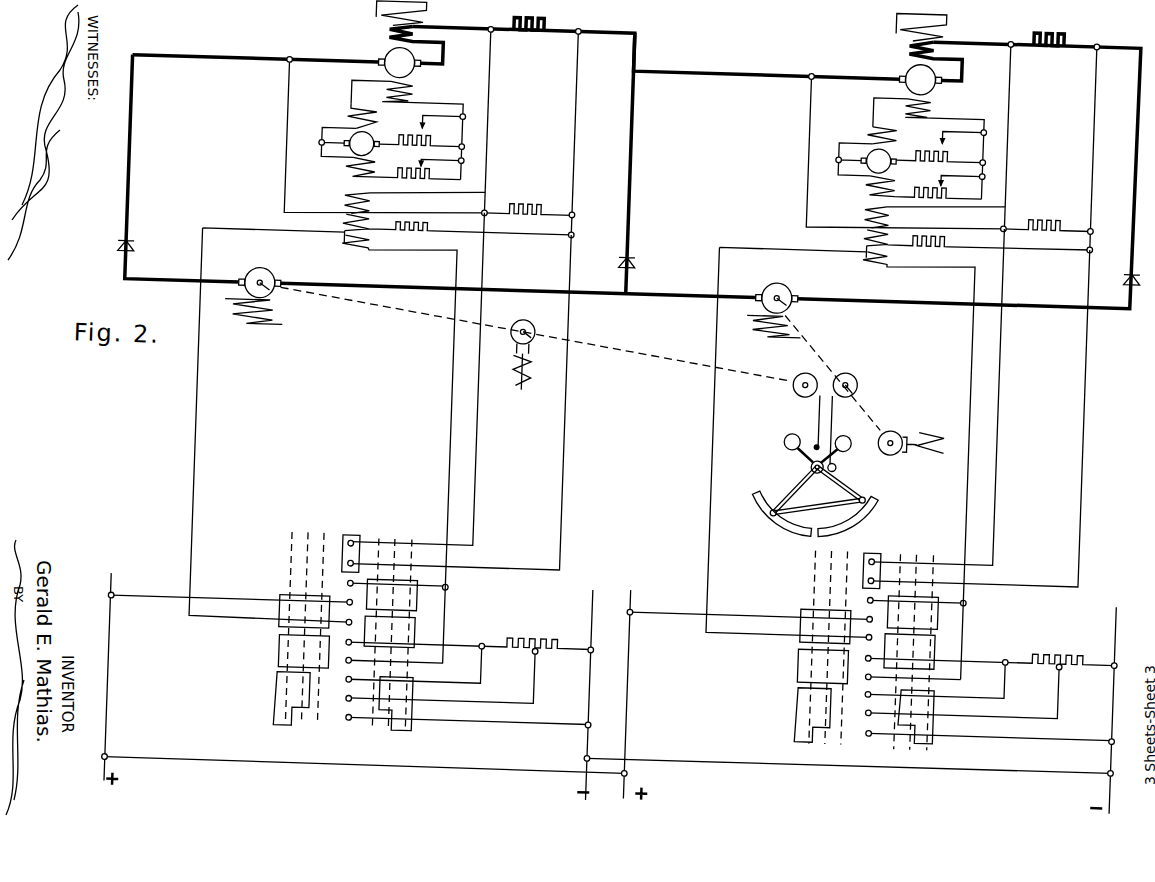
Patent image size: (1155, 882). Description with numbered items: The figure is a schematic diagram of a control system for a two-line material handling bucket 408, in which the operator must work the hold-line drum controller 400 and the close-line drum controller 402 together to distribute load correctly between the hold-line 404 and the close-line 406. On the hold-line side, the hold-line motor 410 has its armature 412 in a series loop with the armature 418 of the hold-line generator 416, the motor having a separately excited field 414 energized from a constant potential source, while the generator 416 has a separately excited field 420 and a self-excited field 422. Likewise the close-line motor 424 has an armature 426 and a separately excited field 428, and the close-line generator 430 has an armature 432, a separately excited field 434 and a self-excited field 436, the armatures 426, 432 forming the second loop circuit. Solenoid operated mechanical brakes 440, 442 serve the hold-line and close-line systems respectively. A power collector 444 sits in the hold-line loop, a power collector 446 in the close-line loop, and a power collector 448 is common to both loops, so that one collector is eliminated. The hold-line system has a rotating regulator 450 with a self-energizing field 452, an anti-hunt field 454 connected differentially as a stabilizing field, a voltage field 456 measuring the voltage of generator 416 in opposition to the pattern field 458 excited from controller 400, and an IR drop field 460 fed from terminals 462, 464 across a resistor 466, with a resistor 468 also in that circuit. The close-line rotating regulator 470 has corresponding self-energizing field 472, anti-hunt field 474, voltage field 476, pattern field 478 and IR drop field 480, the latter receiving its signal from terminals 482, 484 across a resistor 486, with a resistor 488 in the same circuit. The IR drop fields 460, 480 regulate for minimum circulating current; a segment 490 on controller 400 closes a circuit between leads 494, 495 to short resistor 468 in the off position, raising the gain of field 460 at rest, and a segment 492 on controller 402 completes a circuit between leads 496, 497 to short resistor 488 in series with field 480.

The hold-line drum controller 400 is at (374, 758).
The close-line drum controller 402 is at (909, 755).
The hold-line 404 is at (816, 408).
The close-line 406 is at (830, 412).
The material handling bucket 408 is at (777, 514).
The hold-line motor 410 is at (251, 285).
The armature 412 is at (272, 284).
The separately excited field 414 is at (254, 322).
The hold-line generator 416 is at (377, 62).
The armature 418 is at (409, 73).
The separately excited field 420 is at (396, 97).
The self-excited field 422 is at (378, 39).
The close-line motor 424 is at (772, 275).
The armature 426 is at (791, 287).
The separately excited field 428 is at (772, 332).
The close-line generator 430 is at (893, 63).
The armature 432 is at (927, 73).
The separately excited field 434 is at (920, 98).
The self-excited field 436 is at (898, 44).
The solenoid operated mechanical brake 440 is at (518, 361).
The solenoid operated mechanical brake 442 is at (929, 428).
The power collector 444 is at (117, 261).
The power collector 446 is at (1129, 272).
The power collector 448 is at (630, 265).
The rotating regulator 450 is at (345, 143).
The self-energizing field 452 is at (358, 127).
The anti-hunt field 454 is at (360, 178).
The voltage field 456 is at (342, 230).
The pattern field 458 is at (342, 248).
The IR drop field 460 is at (339, 209).
The terminal 462 is at (480, 37).
The terminal 464 is at (567, 37).
The resistor 466 is at (540, 16).
The resistor 468 is at (524, 206).
The rotating regulator 470 is at (862, 143).
The self-energizing field 472 is at (878, 128).
The anti-hunt field 474 is at (878, 176).
The voltage field 476 is at (864, 230).
The pattern field 478 is at (864, 251).
The IR drop field 480 is at (866, 209).
The terminal 482 is at (1001, 36).
The terminal 484 is at (1087, 36).
The resistor 486 is at (1054, 29).
The resistor 488 is at (1043, 205).
The segment 490 is at (356, 545).
The segment 492 is at (878, 554).
The lead 494 is at (478, 504).
The lead 495 is at (566, 498).
The lead 496 is at (998, 501).
The lead 497 is at (1084, 501).